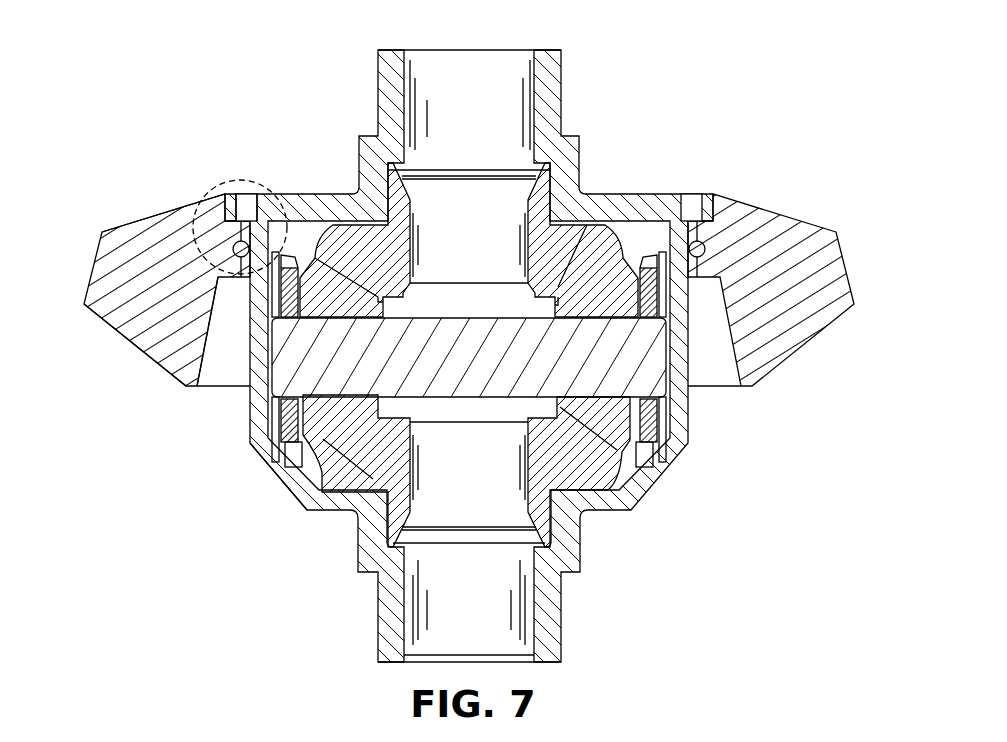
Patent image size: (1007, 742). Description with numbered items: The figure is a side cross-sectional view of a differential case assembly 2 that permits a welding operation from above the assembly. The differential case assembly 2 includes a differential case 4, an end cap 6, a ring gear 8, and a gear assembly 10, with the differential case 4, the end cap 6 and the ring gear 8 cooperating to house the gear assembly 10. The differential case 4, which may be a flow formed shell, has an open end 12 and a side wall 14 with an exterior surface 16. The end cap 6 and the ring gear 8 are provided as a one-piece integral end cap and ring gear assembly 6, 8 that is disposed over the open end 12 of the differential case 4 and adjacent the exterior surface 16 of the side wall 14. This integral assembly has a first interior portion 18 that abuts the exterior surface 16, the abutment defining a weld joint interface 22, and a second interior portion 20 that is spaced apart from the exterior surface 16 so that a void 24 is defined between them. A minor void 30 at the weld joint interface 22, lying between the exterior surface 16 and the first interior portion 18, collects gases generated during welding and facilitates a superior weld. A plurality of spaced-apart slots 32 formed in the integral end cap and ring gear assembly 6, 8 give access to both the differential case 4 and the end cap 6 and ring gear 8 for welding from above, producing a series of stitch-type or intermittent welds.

The differential case assembly 2 is at (631, 126).
The differential case 4 is at (700, 431).
The end cap 6 is at (350, 188).
The ring gear 8 is at (131, 219).
The gear assembly 10 is at (337, 445).
The open end 12 is at (637, 245).
The side wall 14 is at (252, 440).
The exterior surface 16 is at (243, 372).
The first interior portion 18 is at (232, 233).
The second interior portion 20 is at (203, 333).
The weld joint interface 22 is at (262, 228).
The void 24 is at (222, 326).
The minor void 30 is at (241, 256).
The slots 32 is at (245, 193).